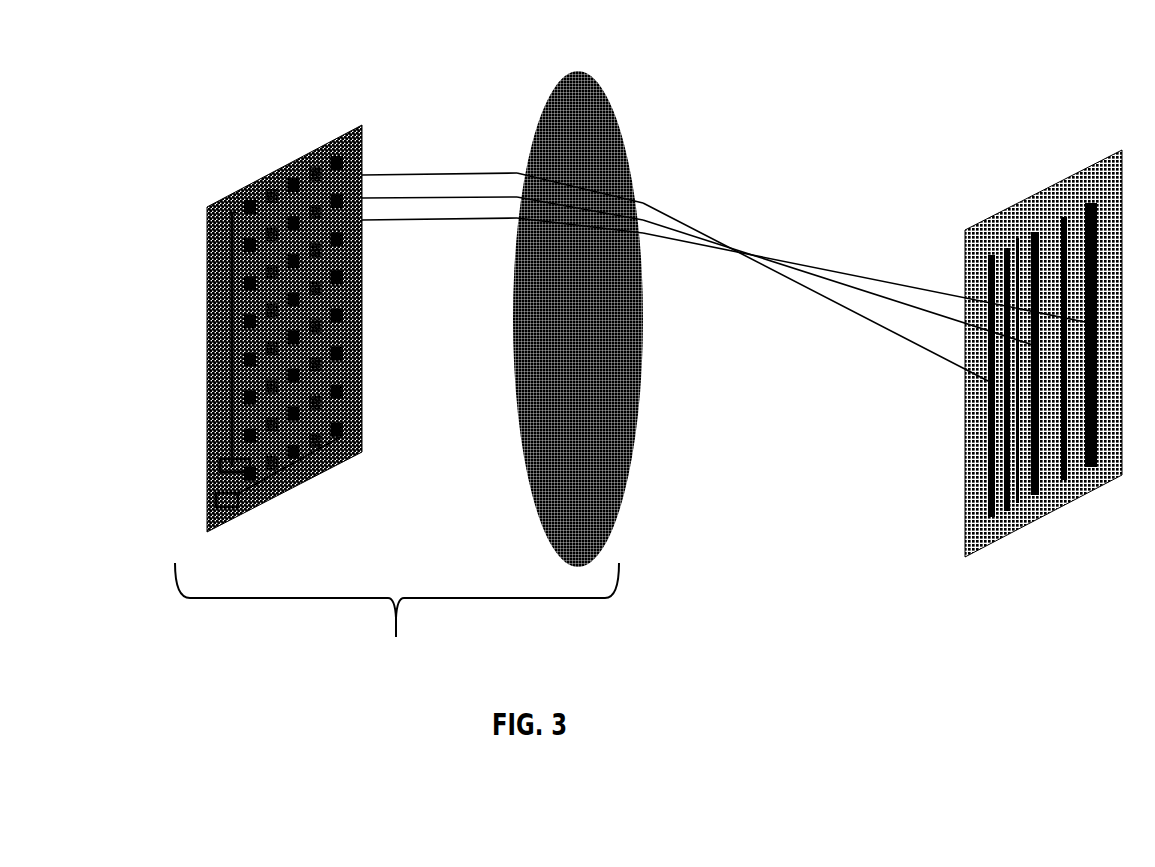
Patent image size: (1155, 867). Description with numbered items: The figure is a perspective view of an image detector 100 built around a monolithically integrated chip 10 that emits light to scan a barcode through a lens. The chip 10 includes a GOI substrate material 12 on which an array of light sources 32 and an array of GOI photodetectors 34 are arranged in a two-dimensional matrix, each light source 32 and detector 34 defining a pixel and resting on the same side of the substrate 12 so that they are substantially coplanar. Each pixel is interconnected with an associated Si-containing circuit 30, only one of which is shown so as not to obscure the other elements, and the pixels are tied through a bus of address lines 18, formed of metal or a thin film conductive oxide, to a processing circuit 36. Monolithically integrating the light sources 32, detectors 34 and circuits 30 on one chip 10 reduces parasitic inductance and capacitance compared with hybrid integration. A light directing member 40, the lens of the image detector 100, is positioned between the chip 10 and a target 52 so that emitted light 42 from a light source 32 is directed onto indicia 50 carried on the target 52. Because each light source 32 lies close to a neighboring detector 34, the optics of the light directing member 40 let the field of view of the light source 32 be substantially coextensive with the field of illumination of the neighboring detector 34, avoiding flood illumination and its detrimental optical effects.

The monolithically integrated chip 10 is at (219, 286).
The GOI substrate material 12 is at (215, 270).
The bus of address lines 18 is at (230, 318).
The Si-containing circuit 30 is at (221, 464).
The light source 32 is at (230, 214).
The GOI photodetector 34 is at (253, 203).
The processing circuit 36 is at (216, 502).
The light directing member 40 is at (595, 118).
The emitted light 42 is at (444, 172).
The indicia 50 is at (1005, 468).
The target 52 is at (985, 324).
The image detector 100 is at (397, 620).